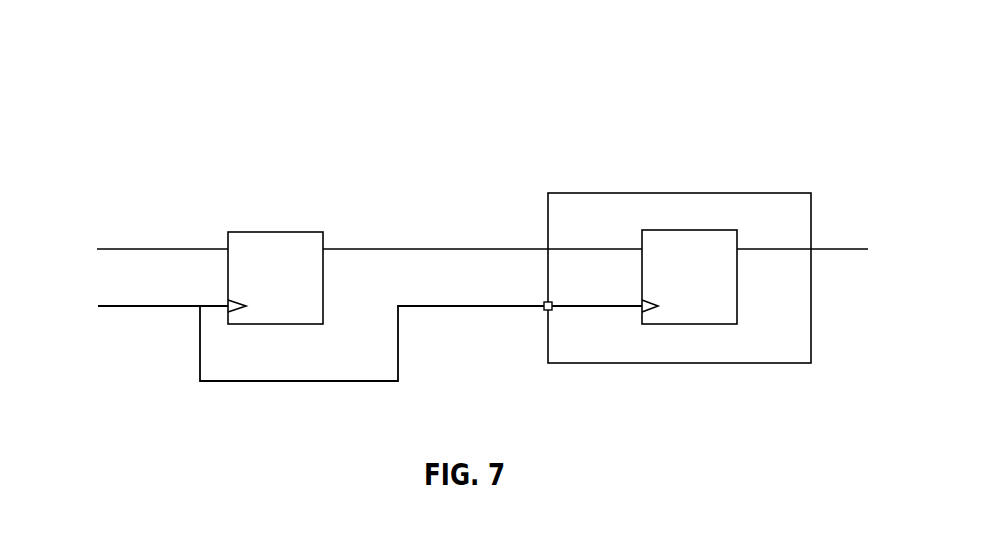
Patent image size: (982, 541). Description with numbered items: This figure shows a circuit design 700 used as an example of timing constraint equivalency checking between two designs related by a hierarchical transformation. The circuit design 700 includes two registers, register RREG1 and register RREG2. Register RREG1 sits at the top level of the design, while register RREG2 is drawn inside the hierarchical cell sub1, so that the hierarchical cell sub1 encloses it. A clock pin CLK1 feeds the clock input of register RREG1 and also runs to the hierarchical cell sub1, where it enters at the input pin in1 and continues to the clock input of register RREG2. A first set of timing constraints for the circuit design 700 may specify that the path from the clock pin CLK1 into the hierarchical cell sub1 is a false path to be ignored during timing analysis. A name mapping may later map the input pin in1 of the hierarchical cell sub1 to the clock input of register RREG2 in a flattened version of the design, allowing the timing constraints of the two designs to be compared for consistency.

The circuit design 700 is at (199, 96).
The clock pin CLK1 is at (291, 339).
The register RREG1 is at (312, 288).
The register RREG2 is at (725, 288).
The hierarchical cell sub1 is at (792, 193).
The input pin in1 is at (539, 314).